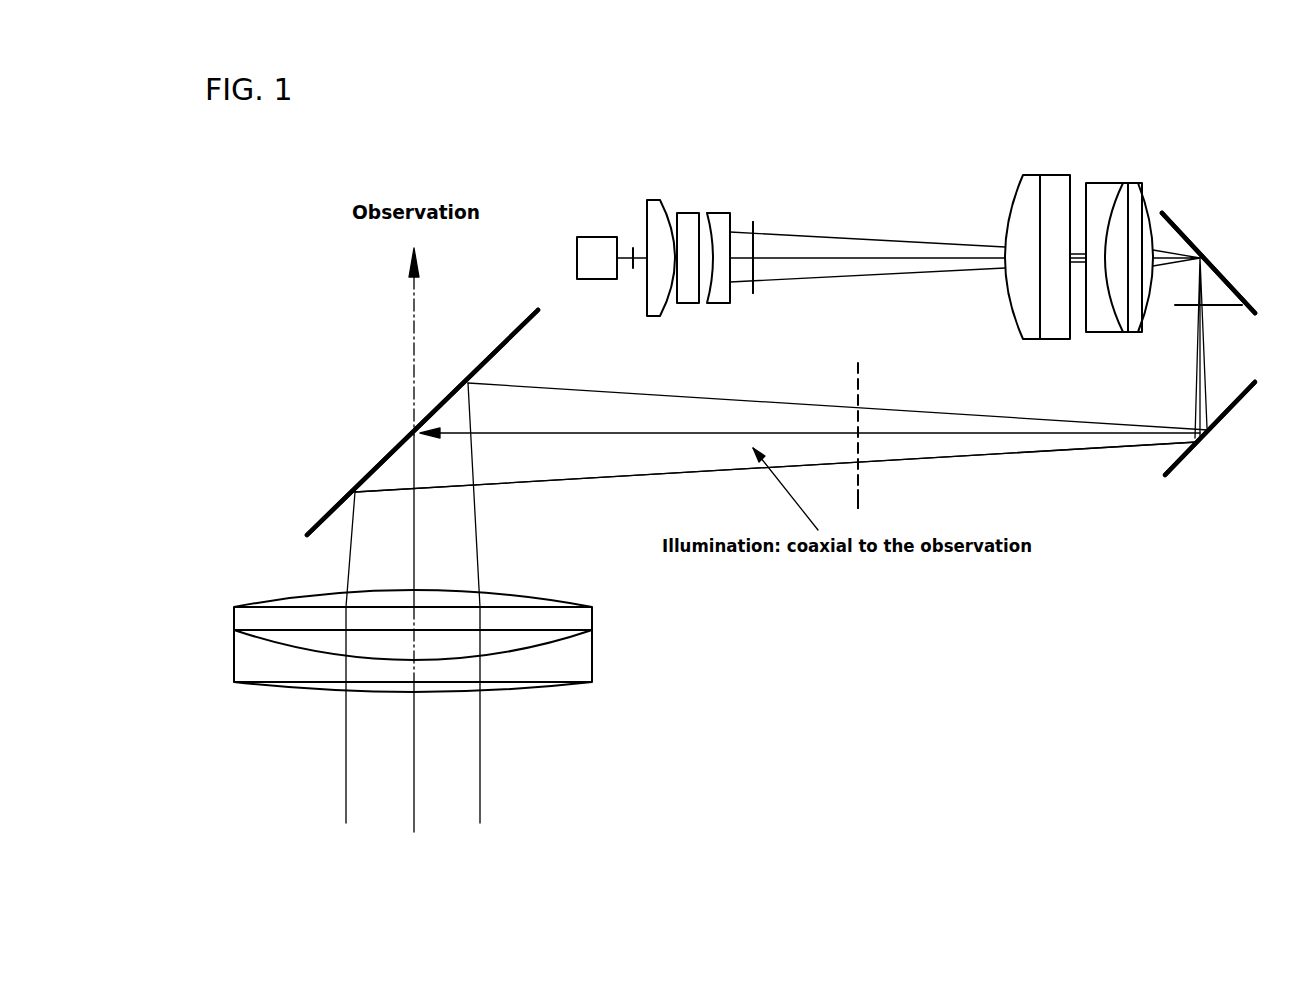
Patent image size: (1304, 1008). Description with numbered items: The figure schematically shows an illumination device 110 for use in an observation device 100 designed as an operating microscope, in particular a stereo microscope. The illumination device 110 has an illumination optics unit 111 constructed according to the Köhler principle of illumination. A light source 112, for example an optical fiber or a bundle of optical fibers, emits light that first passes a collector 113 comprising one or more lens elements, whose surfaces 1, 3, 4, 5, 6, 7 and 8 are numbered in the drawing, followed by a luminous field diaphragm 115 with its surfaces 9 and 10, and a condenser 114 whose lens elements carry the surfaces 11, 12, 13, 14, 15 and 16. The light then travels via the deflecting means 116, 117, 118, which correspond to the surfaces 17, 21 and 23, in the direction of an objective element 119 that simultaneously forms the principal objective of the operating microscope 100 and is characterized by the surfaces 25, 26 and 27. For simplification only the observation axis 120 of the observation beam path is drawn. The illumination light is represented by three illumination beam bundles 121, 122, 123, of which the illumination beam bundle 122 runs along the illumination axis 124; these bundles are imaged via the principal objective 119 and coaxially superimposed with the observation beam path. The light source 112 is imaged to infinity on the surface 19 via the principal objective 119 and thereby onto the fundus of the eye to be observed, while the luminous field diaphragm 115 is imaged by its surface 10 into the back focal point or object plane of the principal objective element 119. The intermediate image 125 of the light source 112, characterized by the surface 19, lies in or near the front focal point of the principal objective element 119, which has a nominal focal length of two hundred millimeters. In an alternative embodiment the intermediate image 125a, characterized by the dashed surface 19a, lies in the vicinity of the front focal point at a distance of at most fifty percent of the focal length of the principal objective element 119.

The optical surface 1 is at (636, 273).
The optical surface 3 is at (658, 260).
The optical surface 4 is at (661, 245).
The optical surface 5 is at (688, 260).
The optical surface 6 is at (691, 244).
The optical surface 7 is at (718, 260).
The optical surface 8 is at (721, 244).
The optical surface 9 is at (756, 258).
The surface of the luminous field diaphragm 10 is at (756, 242).
The optical surface 11 is at (1038, 259).
The optical surface 12 is at (1045, 259).
The optical surface 13 is at (1045, 259).
The optical surface 14 is at (1045, 243).
The optical surface 15 is at (1115, 260).
The optical surface 16 is at (1119, 243).
The optical surface 17 is at (1224, 276).
The surface 19 is at (1201, 321).
The surface 19a is at (868, 388).
The optical surface 21 is at (1226, 419).
The optical surface 23 is at (433, 408).
The surface of the principal objective element 25 is at (431, 643).
The surface of the principal objective element 26 is at (431, 643).
The surface of the principal objective element 27 is at (540, 665).
The observation device 100 is at (322, 293).
The illumination device 110 is at (1082, 545).
The illumination optics unit 111 is at (793, 212).
The light source 112 is at (598, 237).
The collector 113 is at (687, 175).
The condenser 114 is at (1158, 172).
The luminous field diaphragm 115 is at (755, 292).
The deflecting means 116 is at (1222, 275).
The deflecting means 117 is at (1168, 478).
The deflecting means 118 is at (320, 515).
The objective element 119 is at (431, 669).
The observation axis 120 is at (416, 320).
The illumination beam bundle 121 is at (892, 240).
The illumination beam bundle 122 is at (920, 262).
The illumination beam bundle 123 is at (862, 280).
The illumination axis 124 is at (1120, 450).
The intermediate image 125 is at (1220, 312).
The intermediate image 125a is at (860, 500).